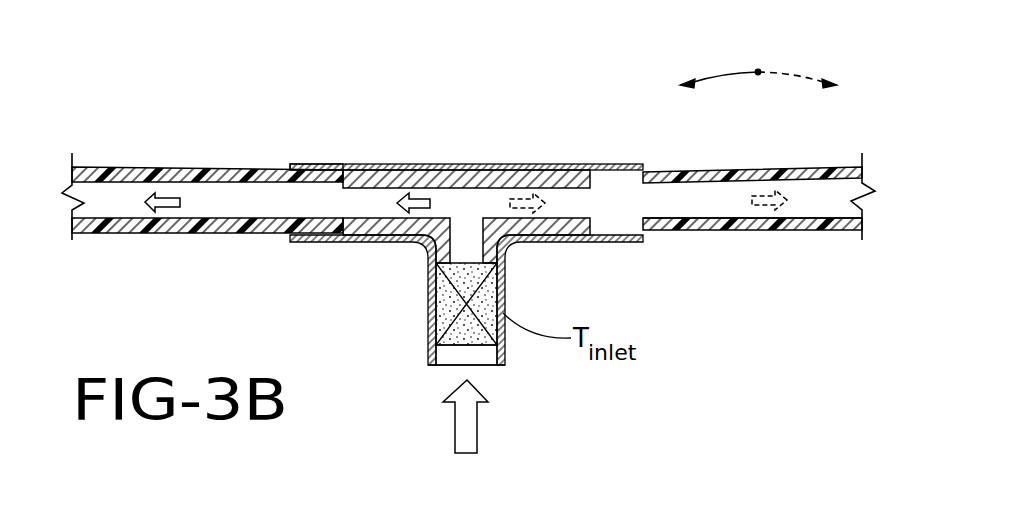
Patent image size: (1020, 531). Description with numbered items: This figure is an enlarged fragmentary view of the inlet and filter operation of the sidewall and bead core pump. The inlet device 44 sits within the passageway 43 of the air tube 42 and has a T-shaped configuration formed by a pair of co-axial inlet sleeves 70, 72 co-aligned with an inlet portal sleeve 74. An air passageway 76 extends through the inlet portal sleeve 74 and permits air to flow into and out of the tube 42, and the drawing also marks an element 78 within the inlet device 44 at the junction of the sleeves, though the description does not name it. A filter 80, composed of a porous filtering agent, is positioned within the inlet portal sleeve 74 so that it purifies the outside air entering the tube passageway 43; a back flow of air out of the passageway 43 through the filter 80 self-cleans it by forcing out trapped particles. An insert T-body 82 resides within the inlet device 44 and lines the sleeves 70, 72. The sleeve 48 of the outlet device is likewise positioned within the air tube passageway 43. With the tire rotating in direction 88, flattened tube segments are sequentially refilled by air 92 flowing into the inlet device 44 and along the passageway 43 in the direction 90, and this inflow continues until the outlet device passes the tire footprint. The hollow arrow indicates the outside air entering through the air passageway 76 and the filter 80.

The air tube 42 is at (127, 172).
The air tube passageway 43 is at (638, 204).
The inlet device 44 is at (442, 333).
The cylindrical sleeve 48 is at (720, 219).
The inlet sleeve 70 is at (503, 166).
The inlet sleeve 72 is at (332, 165).
The inlet portal sleeve 74 is at (430, 330).
The air passageway 76 is at (475, 358).
The channel 78 is at (558, 208).
The filter 80 is at (467, 347).
The insert T-body 82 is at (307, 240).
The direction of tire rotation 88 is at (733, 74).
The direction of air flow 90 is at (167, 205).
The air 92 is at (477, 428).